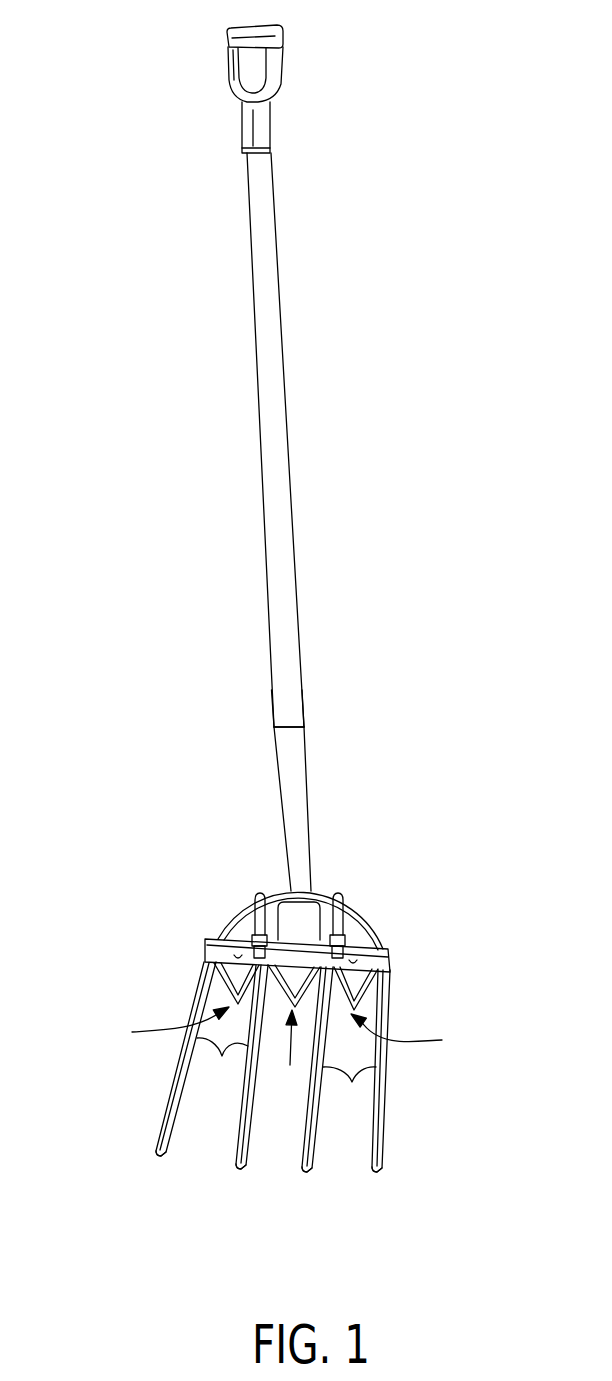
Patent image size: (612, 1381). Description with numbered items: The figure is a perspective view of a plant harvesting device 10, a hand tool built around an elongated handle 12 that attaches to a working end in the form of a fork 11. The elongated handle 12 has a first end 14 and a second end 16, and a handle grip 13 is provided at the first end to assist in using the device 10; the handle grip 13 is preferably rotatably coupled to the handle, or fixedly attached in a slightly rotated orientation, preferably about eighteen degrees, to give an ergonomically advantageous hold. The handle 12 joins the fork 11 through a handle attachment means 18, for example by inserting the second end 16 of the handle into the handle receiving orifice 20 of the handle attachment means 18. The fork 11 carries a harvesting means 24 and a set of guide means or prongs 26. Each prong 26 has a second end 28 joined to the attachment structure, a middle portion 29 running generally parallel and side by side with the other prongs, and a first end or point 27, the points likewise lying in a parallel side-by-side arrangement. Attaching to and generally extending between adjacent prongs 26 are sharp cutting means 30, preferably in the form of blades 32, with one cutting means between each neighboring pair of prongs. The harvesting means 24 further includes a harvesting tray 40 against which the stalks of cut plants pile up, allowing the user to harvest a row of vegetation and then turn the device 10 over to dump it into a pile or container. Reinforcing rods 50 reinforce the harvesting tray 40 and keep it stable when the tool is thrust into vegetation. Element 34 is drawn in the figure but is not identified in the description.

The plant harvesting device 10 is at (465, 672).
The fork 11 is at (300, 748).
The elongated handle 12 is at (273, 478).
The handle grip 13 is at (279, 33).
The first end 14 is at (262, 172).
The second end 16 is at (293, 700).
The handle attachment means 18 is at (328, 880).
The handle receiving orifice 20 is at (288, 726).
The harvesting means 24 is at (148, 1070).
The guide means or prongs 26 is at (242, 1100).
The first ends or points 27 is at (238, 1167).
The second ends 28 is at (250, 903).
The middle portions 29 is at (286, 1079).
The cutting means 30 is at (285, 1057).
The blades 32 is at (204, 966).
The triangular braces 34 is at (226, 990).
The harvesting tray 40 is at (397, 940).
The reinforcing rods 50 is at (286, 891).